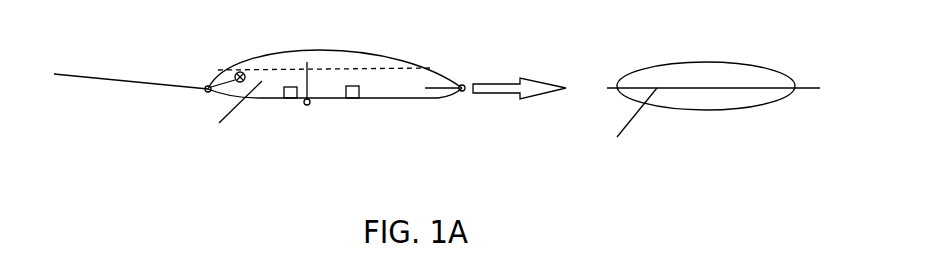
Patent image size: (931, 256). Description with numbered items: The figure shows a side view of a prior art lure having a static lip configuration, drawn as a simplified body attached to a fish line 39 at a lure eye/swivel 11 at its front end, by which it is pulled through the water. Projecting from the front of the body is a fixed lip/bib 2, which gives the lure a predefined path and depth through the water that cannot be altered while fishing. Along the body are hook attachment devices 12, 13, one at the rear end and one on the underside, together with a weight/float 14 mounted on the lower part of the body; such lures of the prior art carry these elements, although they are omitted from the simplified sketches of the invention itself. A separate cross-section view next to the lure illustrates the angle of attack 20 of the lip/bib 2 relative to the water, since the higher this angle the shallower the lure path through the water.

The fish line 39 is at (110, 76).
The lure eye/swivel 11 is at (208, 86).
The hook attachment device 12 is at (462, 85).
The hook attachment device 13 is at (307, 106).
The weight/float 14 is at (352, 99).
The fixed lip/bib 2 is at (218, 118).
The angle of attack 20 is at (637, 100).